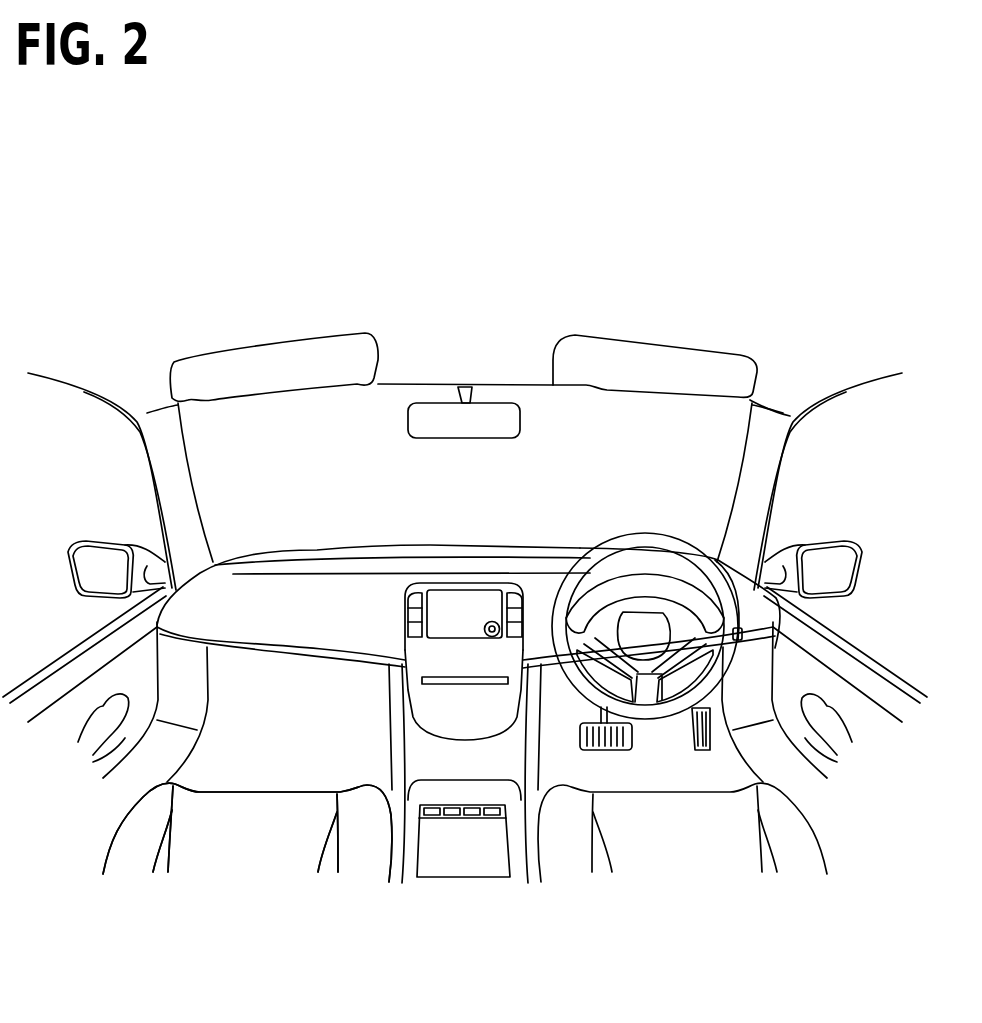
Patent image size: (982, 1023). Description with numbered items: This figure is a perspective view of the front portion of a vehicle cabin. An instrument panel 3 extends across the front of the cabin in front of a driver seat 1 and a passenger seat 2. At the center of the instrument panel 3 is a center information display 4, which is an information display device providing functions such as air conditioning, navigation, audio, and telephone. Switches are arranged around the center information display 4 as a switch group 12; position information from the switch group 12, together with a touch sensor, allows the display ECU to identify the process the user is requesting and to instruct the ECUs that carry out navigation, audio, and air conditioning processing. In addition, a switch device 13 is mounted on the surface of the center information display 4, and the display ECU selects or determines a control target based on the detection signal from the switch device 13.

The driver seat 1 is at (786, 829).
The passenger seat 2 is at (138, 829).
The instrument panel 3 is at (324, 590).
The center information display 4 is at (465, 588).
The switch group 12 is at (457, 610).
The switch device 13 is at (493, 620).